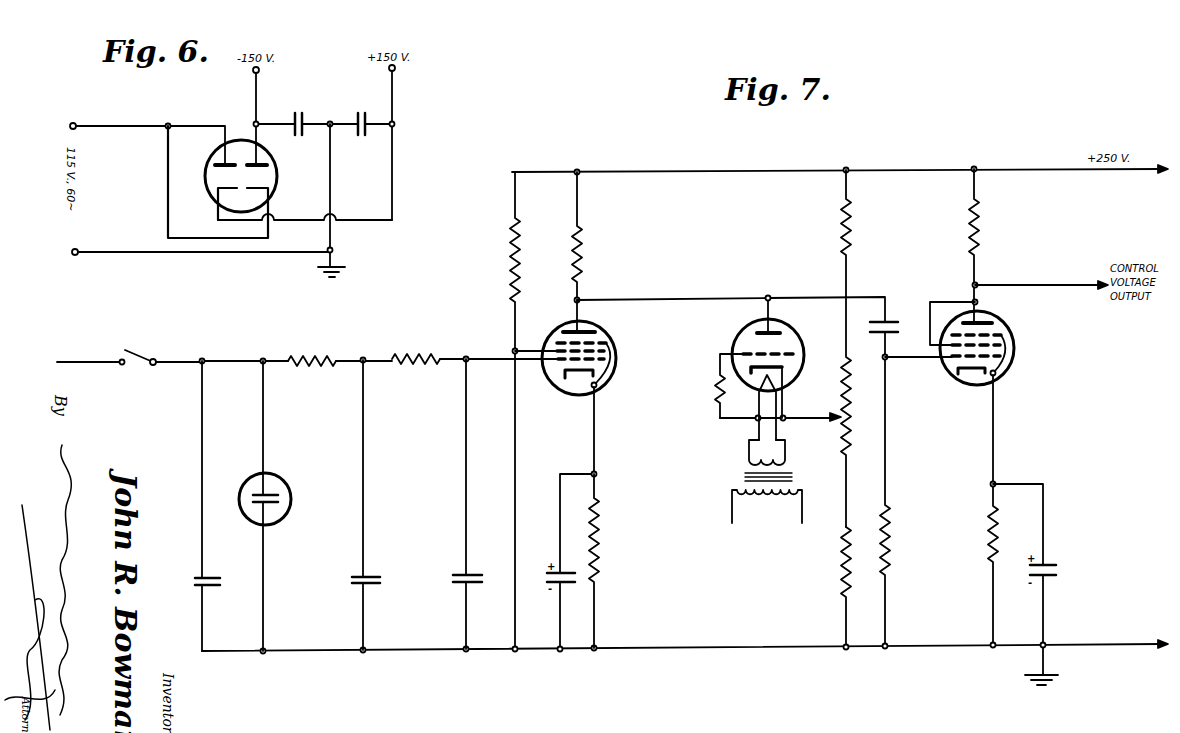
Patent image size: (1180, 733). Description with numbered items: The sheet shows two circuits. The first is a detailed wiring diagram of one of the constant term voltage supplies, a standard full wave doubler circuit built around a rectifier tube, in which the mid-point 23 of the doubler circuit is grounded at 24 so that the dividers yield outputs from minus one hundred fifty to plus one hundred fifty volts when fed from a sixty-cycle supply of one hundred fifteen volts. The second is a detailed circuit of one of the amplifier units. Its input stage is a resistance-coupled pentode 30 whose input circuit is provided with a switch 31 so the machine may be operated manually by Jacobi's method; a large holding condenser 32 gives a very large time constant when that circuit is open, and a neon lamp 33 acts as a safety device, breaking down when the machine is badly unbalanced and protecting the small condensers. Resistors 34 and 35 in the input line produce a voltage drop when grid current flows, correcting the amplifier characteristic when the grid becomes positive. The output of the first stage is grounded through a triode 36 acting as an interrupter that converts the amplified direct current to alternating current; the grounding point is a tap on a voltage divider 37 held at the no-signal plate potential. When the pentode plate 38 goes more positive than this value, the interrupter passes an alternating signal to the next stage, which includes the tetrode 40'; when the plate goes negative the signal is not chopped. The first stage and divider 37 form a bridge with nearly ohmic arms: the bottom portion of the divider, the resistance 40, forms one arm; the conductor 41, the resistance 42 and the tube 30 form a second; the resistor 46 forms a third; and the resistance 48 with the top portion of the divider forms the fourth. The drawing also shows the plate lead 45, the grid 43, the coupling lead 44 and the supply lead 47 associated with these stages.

In FIG. 6, the mid-point 23 is at (330, 121).
In FIG. 6, the ground 24 is at (340, 263).
In FIG. 7, the pentode 30 is at (584, 340).
In FIG. 7, the switch 31 is at (135, 366).
In FIG. 7, the holding condenser 32 is at (459, 573).
In FIG. 7, the neon lamp 33 is at (286, 477).
In FIG. 7, the resistor 34 is at (311, 367).
In FIG. 7, the resistor 35 is at (416, 367).
In FIG. 7, the triode 36 is at (731, 346).
In FIG. 7, the voltage divider 37 is at (838, 421).
In FIG. 7, the pentode plate 38 is at (553, 332).
In FIG. 7, the resistance 40 is at (827, 587).
In FIG. 7, the tetrode 40' is at (991, 348).
In FIG. 7, the conductor 41 is at (692, 650).
In FIG. 7, the resistance 42 is at (603, 537).
In FIG. 7, the control grid 43 is at (584, 316).
In FIG. 7, the coupling lead 44 is at (687, 297).
In FIG. 7, the anode lead 45 is at (762, 310).
In FIG. 7, the resistor 46 is at (586, 249).
In FIG. 7, the positive supply lead 47 is at (720, 171).
In FIG. 7, the resistance 48 is at (840, 229).